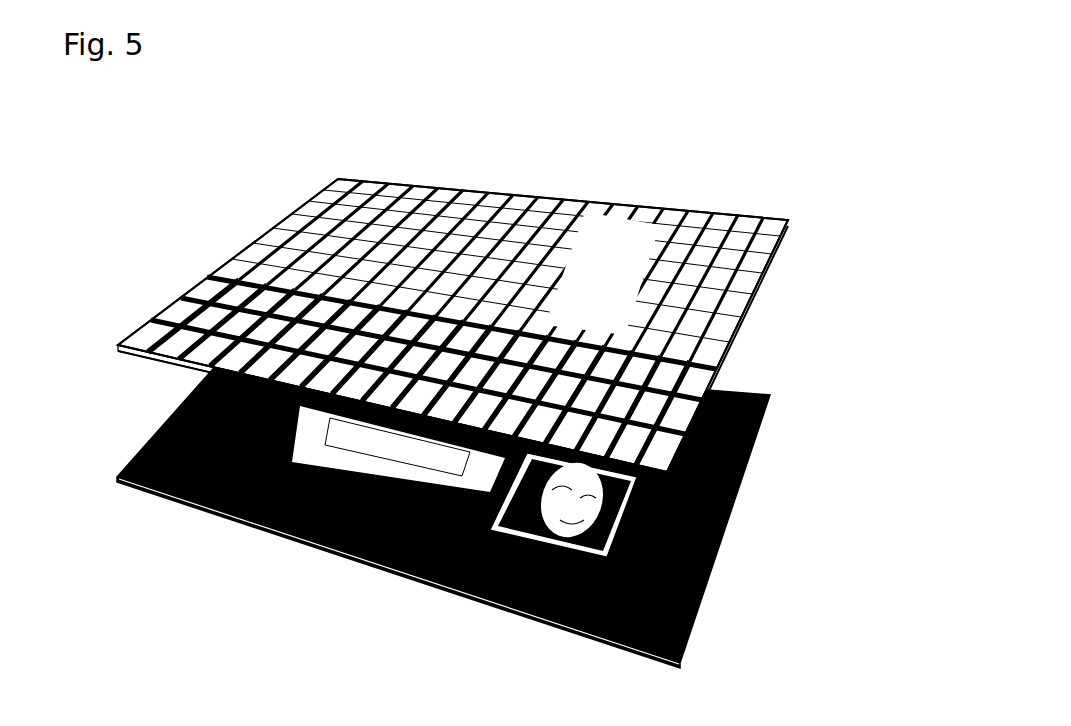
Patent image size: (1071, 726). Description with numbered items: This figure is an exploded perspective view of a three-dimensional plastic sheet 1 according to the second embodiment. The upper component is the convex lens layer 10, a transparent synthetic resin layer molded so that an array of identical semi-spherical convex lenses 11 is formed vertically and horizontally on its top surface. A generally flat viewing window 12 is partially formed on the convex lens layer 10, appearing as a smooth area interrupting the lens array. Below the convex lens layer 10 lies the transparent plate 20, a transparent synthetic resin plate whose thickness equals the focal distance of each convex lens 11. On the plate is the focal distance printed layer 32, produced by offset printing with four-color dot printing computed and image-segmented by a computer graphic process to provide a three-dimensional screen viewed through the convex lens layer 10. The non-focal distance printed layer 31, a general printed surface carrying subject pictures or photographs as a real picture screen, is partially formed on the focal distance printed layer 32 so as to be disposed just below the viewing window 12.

The three-dimensional plastic sheet 1 is at (210, 222).
The convex lens layer 10 is at (486, 295).
The convex lenses 11 is at (678, 333).
The viewing window 12 is at (582, 273).
The transparent plate 20 is at (157, 358).
The non-focal distance printed layer 31 is at (470, 597).
The focal distance printed layer 32 is at (286, 533).